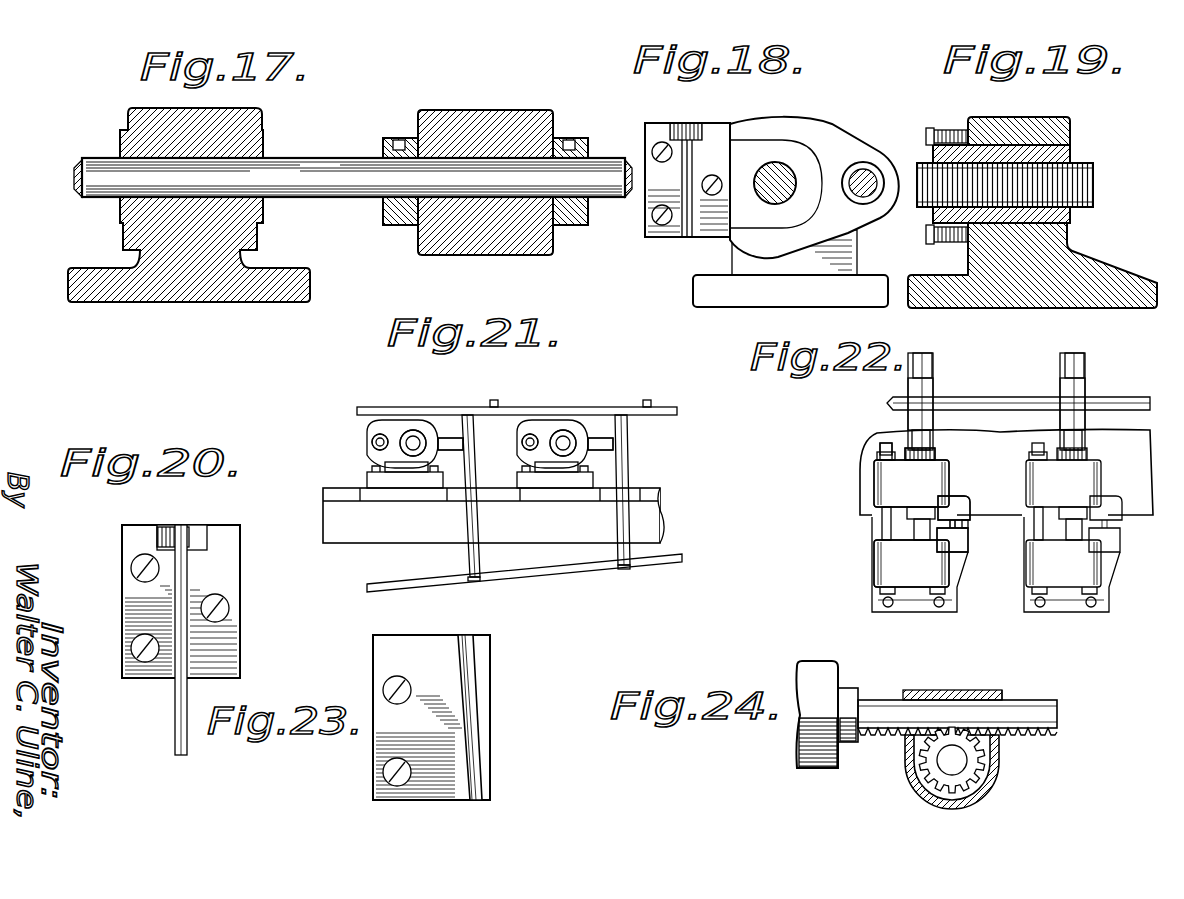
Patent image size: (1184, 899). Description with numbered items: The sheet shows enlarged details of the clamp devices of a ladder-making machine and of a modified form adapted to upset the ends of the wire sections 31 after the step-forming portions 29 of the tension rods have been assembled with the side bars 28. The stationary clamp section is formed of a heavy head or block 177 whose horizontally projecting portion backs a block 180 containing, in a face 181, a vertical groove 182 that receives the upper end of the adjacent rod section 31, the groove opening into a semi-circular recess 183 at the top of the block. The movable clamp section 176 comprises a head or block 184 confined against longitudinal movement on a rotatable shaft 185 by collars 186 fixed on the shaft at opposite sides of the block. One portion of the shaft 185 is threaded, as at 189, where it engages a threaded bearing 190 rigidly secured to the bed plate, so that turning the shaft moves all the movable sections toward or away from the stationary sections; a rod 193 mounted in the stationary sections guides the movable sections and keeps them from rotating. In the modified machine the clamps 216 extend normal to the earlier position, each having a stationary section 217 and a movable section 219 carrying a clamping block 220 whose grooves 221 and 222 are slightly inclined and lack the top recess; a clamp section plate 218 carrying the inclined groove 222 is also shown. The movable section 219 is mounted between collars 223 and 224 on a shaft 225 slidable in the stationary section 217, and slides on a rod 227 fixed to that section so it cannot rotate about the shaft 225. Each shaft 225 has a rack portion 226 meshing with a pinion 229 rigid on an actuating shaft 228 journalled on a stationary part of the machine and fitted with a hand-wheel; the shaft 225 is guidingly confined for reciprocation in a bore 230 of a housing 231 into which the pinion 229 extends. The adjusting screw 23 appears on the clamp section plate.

In FIG. 17, the movable clamp section 176 is at (482, 246).
In FIG. 17, the head or block portion 177 is at (263, 113).
In FIG. 17, the head or block 184 is at (490, 110).
In FIG. 17, the rotatable shaft 185 is at (318, 158).
In FIG. 18, the rotatable shaft 185 is at (793, 170).
In FIG. 17, the collars 186 is at (390, 137).
In FIG. 18, the block 180 is at (660, 116).
In FIG. 18, the face 181 is at (745, 130).
In FIG. 18, the vertical groove 182 is at (684, 237).
In FIG. 18, the recess 183 is at (690, 135).
In FIG. 18, the rod 193 is at (866, 178).
In FIG. 19, the threaded portion 189 is at (1094, 173).
In FIG. 19, the threaded bearing 190 is at (1067, 131).
In FIG. 20, the adjusting screw 23 is at (190, 545).
In FIG. 20, the wire sections 31 is at (190, 579).
In FIG. 21, the wire sections 31 is at (462, 521).
In FIG. 21, the side bars 28 is at (520, 407).
In FIG. 21, the step-forming portions 29 is at (471, 455).
In FIG. 21, the clamps 216 is at (455, 436).
In FIG. 22, the clamps 216 is at (977, 529).
In FIG. 21, the stationary clamp section 217 is at (408, 425).
In FIG. 22, the stationary clamp section 217 is at (958, 572).
In FIG. 21, the shafts 225 is at (413, 443).
In FIG. 22, the shafts 225 is at (934, 372).
In FIG. 24, the shafts 225 is at (1058, 712).
In FIG. 21, the rods 227 is at (372, 442).
In FIG. 22, the rods 227 is at (880, 448).
In FIG. 22, the actuating shaft 228 is at (1125, 397).
In FIG. 24, the actuating shaft 228 is at (960, 758).
In FIG. 22, the collar 223 is at (882, 530).
In FIG. 22, the movable clamp section 219 is at (940, 478).
In FIG. 24, the movable clamp section 219 is at (815, 763).
In FIG. 22, the collar 224 is at (936, 452).
In FIG. 24, the collar 224 is at (850, 745).
In FIG. 22, the clamping block 220 is at (966, 515).
In FIG. 22, the groove 221 is at (973, 530).
In FIG. 22, the plate 218 is at (958, 535).
In FIG. 23, the plate 218 is at (492, 738).
In FIG. 22, the groove 222 is at (948, 550).
In FIG. 23, the groove 222 is at (468, 694).
In FIG. 24, the bores 230 is at (985, 668).
In FIG. 24, the housings 231 is at (1005, 697).
In FIG. 24, the rack portions 226 is at (1030, 734).
In FIG. 24, the pinions 229 is at (968, 783).